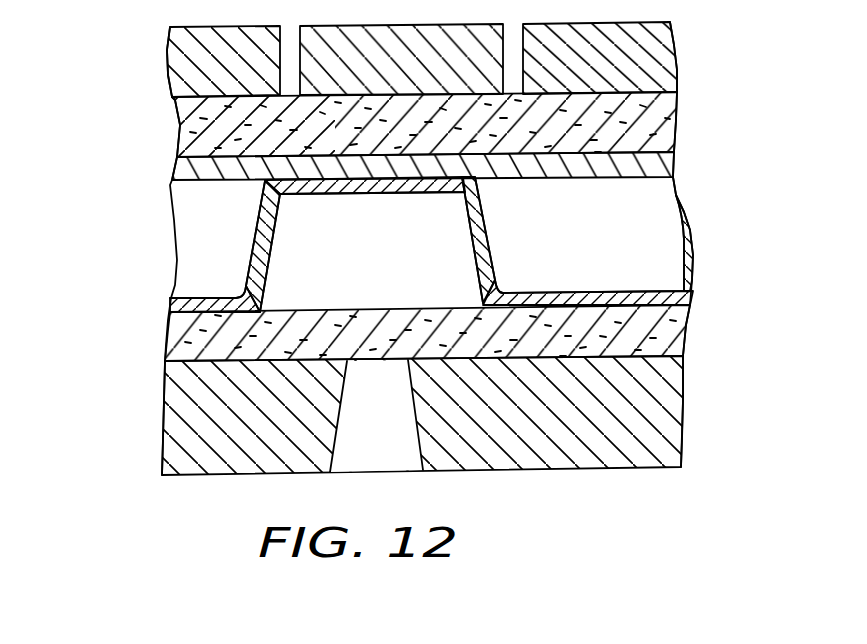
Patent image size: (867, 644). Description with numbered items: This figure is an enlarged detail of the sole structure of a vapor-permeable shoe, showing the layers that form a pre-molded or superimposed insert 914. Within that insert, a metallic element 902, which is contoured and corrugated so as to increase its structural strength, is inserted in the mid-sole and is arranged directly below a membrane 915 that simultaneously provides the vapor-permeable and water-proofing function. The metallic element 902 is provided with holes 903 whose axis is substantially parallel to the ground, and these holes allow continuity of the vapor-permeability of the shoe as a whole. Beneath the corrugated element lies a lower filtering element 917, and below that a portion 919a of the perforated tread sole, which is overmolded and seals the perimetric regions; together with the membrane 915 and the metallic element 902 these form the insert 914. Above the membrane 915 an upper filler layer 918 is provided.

The metallic element 902 is at (697, 207).
The holes 903 is at (270, 250).
The pre-molded or superimposed insert 914 is at (83, 475).
The membrane 915 is at (172, 170).
The lower filtering element 917 is at (170, 338).
The upper filler layer 918 is at (678, 112).
The portion of perforated tread sole 919a is at (548, 455).